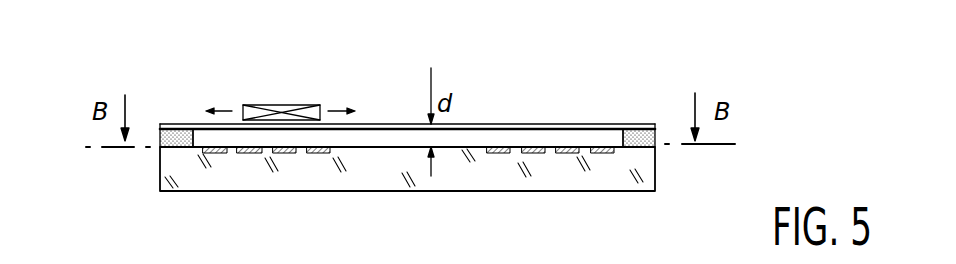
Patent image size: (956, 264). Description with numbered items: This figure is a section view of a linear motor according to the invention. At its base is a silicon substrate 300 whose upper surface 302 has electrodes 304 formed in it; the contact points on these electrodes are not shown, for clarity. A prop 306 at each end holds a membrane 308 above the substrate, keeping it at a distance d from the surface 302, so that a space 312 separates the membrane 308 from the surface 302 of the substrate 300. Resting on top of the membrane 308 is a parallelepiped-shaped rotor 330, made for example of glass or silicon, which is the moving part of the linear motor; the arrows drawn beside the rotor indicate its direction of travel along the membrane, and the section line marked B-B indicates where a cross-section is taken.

The silicon substrate 300 is at (556, 178).
The surface 302 is at (372, 146).
The electrodes 304 is at (281, 154).
The prop 306 is at (638, 150).
The membrane 308 is at (562, 124).
The space 312 is at (477, 136).
The rotor 330 is at (283, 108).